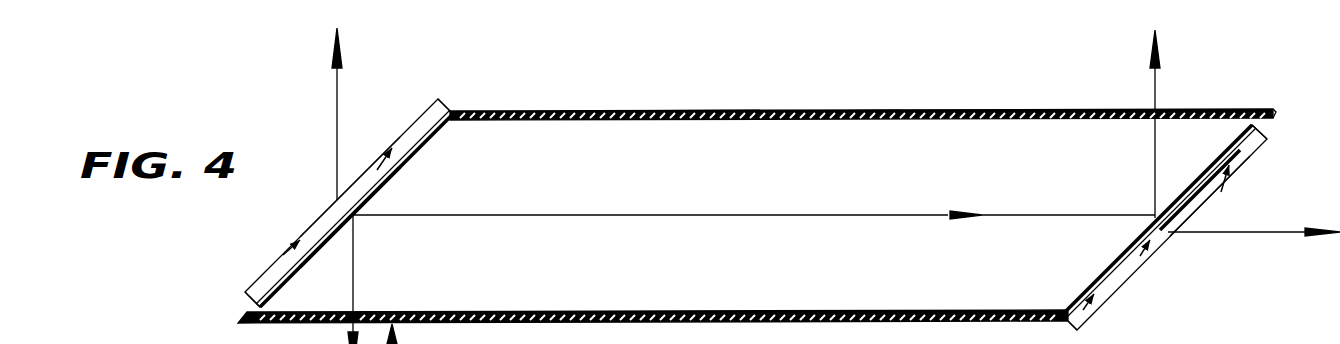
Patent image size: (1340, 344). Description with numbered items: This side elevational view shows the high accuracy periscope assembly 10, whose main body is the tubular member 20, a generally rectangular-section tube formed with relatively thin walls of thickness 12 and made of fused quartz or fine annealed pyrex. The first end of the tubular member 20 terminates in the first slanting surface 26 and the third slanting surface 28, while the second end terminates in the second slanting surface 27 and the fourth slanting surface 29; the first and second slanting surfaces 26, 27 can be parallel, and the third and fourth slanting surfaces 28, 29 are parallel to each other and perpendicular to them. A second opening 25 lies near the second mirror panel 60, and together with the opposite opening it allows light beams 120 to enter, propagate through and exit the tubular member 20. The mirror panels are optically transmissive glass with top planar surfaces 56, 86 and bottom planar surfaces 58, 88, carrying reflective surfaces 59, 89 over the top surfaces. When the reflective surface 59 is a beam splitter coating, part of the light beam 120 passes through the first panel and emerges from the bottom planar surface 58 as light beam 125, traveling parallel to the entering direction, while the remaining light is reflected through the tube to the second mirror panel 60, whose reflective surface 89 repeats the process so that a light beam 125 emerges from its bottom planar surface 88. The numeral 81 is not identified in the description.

The high accuracy periscope assembly 10 is at (852, 88).
The wall thickness 12 is at (734, 108).
The tubular member 20 is at (584, 109).
The second opening 25 is at (1176, 103).
The first slanting surface 26 is at (250, 303).
The second slanting surface 27 is at (1272, 121).
The third slanting surface 28 is at (452, 120).
The fourth slanting surface 29 is at (1058, 306).
The top planar surface 56 is at (424, 130).
The bottom planar surface 58 is at (371, 163).
The reflective surface 59 is at (413, 160).
The second mirror panel 60 is at (1252, 147).
The lower strip 81 is at (694, 327).
The top planar surface 86 is at (1217, 186).
The bottom planar surface 88 is at (1164, 247).
The reflective surface 89 is at (1229, 138).
The light beam 120 is at (790, 213).
The light beam 125 is at (336, 88).